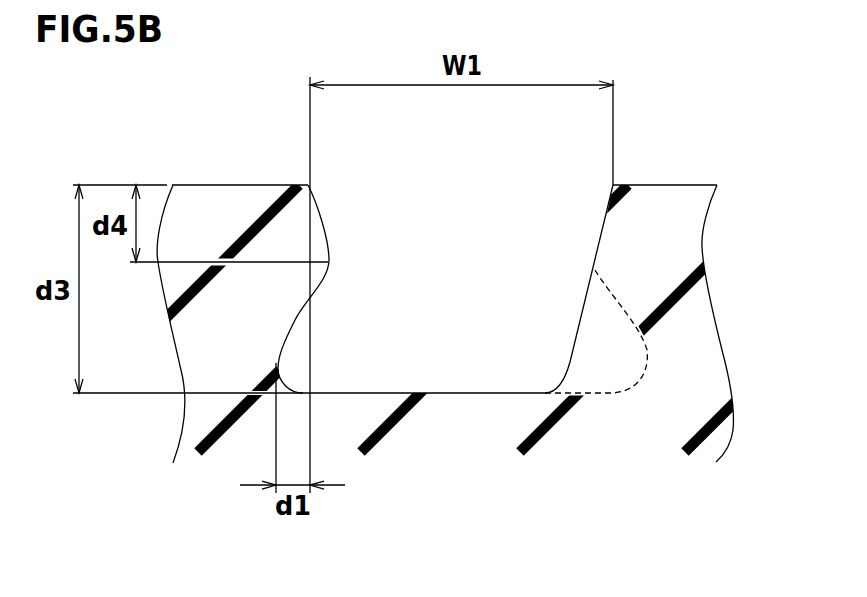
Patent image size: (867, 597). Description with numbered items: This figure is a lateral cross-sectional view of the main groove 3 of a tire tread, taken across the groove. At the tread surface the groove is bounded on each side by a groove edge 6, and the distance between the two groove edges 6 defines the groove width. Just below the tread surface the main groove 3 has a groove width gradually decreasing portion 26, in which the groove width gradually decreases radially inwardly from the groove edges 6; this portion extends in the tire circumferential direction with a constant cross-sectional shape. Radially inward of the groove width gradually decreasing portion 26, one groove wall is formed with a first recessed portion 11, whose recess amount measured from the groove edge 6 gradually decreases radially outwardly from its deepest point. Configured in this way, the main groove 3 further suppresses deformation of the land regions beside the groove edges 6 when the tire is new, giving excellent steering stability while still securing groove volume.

The main groove 3 is at (442, 233).
The groove edge 6 is at (309, 184).
The first recessed portion 11 is at (287, 362).
The groove width gradually decreasing portion 26 is at (538, 248).